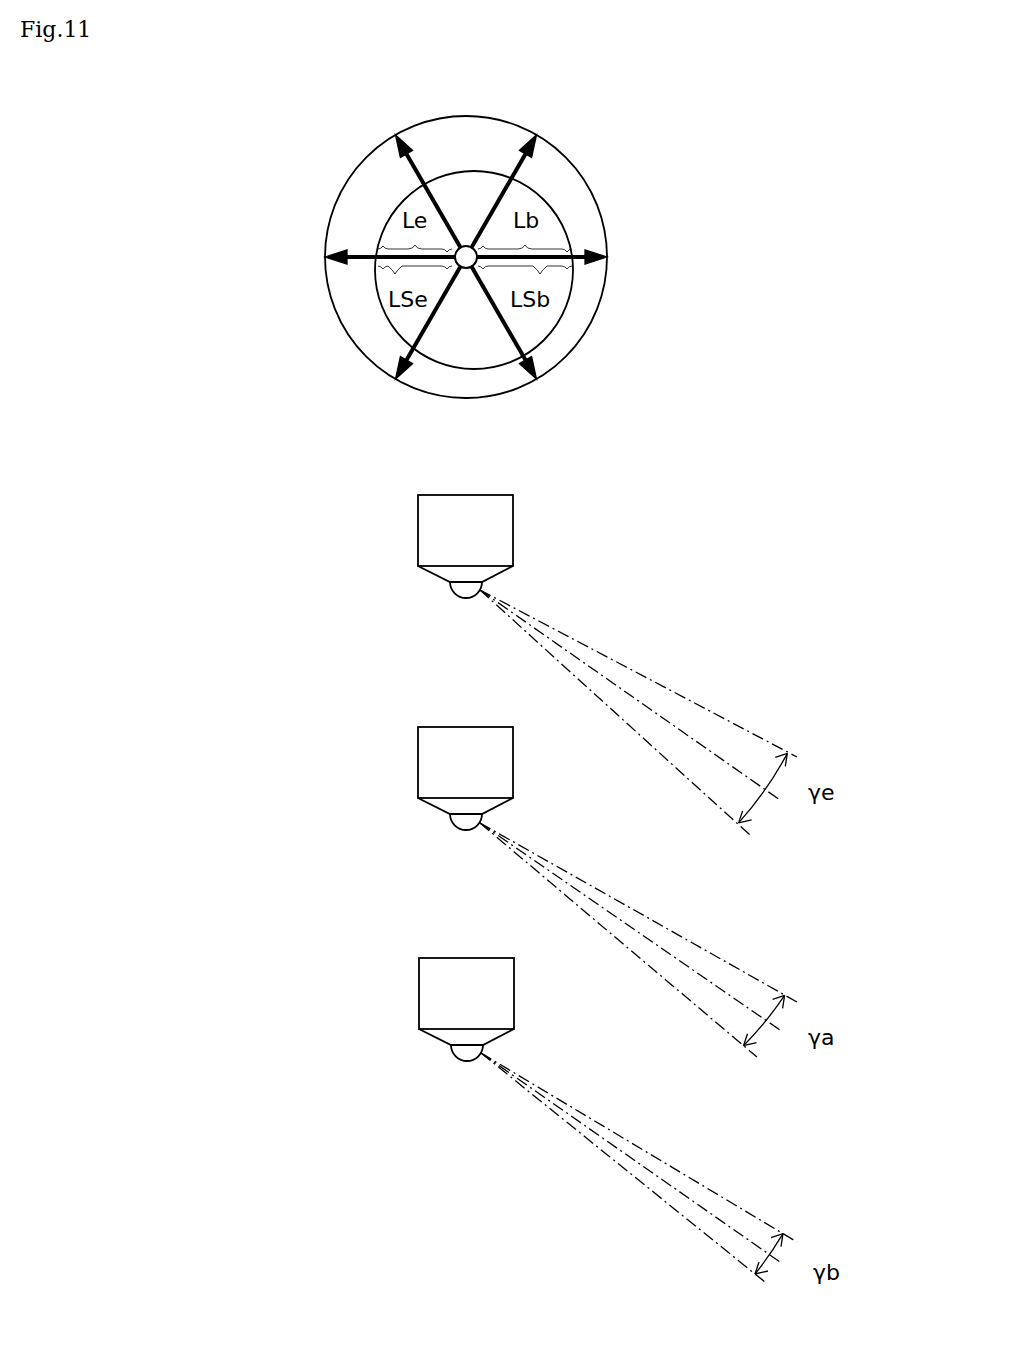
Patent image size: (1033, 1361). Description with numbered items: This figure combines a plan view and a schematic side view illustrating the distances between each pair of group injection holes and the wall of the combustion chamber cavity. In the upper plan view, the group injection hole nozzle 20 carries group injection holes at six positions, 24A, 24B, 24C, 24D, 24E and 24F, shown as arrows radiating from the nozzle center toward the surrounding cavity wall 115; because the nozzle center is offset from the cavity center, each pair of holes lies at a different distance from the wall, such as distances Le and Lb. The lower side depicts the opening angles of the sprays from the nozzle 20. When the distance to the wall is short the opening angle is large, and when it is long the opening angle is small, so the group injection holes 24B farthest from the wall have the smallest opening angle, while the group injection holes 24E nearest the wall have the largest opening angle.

The housing 115 is at (598, 312).
The group injection holes 24A is at (554, 177).
The group injection holes 24B is at (597, 262).
The group injection holes 24C is at (557, 341).
The group injection holes 24D is at (404, 349).
The group injection holes 24E is at (334, 262).
The group injection holes 24F is at (381, 180).
The group injection hole nozzle 20 is at (513, 529).